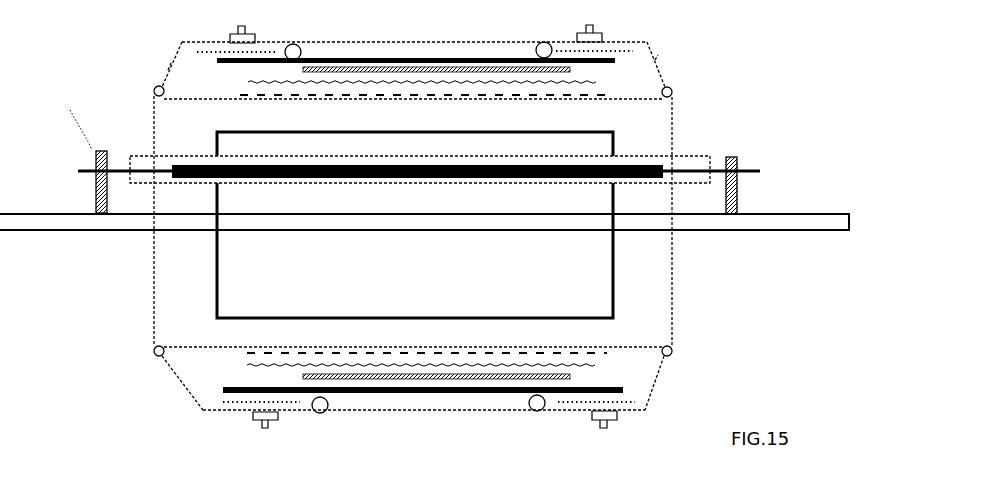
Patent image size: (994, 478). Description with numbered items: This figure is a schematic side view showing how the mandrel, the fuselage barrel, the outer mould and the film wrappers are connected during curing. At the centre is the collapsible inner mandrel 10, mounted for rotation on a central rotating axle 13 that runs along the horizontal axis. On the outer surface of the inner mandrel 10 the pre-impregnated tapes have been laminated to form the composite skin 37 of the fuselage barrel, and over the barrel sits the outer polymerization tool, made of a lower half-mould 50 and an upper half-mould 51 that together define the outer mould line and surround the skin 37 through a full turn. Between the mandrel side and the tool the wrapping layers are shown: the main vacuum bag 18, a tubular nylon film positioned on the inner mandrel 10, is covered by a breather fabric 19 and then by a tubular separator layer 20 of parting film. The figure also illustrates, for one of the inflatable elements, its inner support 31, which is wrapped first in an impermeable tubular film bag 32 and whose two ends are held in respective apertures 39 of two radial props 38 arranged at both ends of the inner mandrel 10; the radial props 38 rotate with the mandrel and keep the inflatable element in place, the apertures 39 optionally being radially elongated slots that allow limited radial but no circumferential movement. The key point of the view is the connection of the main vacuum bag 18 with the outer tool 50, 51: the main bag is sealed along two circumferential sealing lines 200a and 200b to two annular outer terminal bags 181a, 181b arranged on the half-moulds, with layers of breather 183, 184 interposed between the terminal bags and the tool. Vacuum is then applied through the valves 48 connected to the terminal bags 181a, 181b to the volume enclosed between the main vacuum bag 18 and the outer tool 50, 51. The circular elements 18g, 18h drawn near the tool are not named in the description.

The collapsible inner mandrel 10 is at (613, 295).
The central rotating axle 13 is at (790, 226).
The main vacuum bag 18 is at (388, 99).
The housing roller 18g is at (294, 44).
The housing roller 18h is at (541, 43).
The breather fabric 19 is at (510, 94).
The separator layer 20 is at (465, 82).
The inner support 31 is at (176, 178).
The impermeable tubular film bag 32 is at (143, 156).
The skin 37 is at (362, 67).
The radial prop 38 is at (95, 192).
The aperture 39 is at (804, 144).
The valve 48 is at (233, 33).
The lower half-mould 50 is at (364, 393).
The upper half-mould 51 is at (326, 58).
The annular outer terminal bag 181a is at (172, 70).
The annular outer terminal bag 181b is at (647, 42).
The layer of breather 183 is at (230, 410).
The layer of breather 184 is at (625, 406).
The circumferential sealing line 200a is at (154, 88).
The circumferential sealing line 200b is at (672, 92).